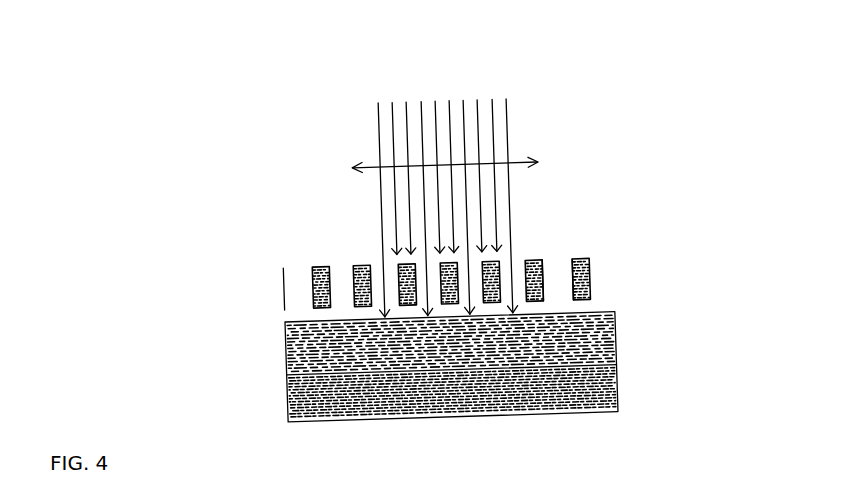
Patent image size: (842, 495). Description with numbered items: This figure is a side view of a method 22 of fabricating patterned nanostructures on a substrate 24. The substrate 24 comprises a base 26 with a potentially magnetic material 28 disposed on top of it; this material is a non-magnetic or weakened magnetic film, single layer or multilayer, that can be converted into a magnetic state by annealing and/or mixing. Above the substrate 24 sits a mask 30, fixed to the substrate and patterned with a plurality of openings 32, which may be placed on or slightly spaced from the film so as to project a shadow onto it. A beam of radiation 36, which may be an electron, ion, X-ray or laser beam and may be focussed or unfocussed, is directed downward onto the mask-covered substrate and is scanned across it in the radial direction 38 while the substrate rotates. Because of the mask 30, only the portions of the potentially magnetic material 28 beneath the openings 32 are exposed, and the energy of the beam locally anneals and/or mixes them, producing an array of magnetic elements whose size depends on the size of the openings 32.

The method 22 is at (283, 119).
The substrate 24 is at (245, 322).
The base 26 is at (616, 392).
The potentially magnetic material 28 is at (613, 333).
The mask 30 is at (589, 272).
The openings 32 is at (558, 273).
The beam of radiation 36 is at (468, 116).
The radial direction 38 is at (529, 162).